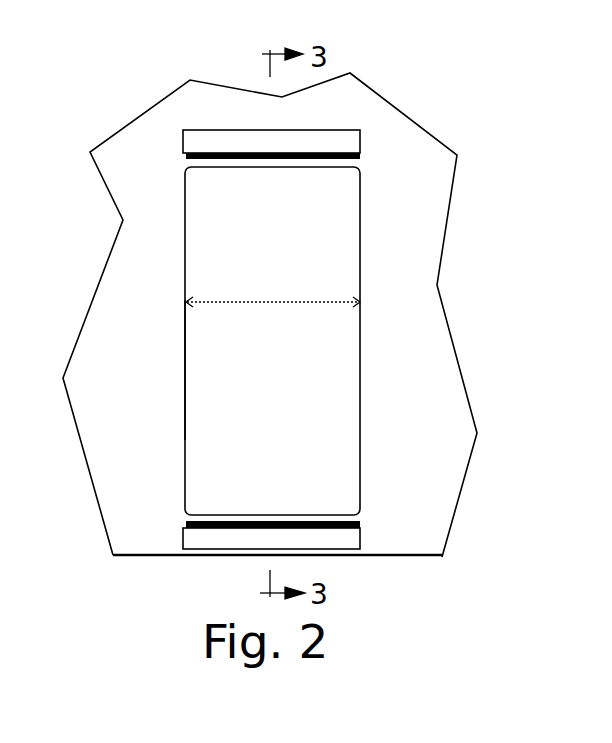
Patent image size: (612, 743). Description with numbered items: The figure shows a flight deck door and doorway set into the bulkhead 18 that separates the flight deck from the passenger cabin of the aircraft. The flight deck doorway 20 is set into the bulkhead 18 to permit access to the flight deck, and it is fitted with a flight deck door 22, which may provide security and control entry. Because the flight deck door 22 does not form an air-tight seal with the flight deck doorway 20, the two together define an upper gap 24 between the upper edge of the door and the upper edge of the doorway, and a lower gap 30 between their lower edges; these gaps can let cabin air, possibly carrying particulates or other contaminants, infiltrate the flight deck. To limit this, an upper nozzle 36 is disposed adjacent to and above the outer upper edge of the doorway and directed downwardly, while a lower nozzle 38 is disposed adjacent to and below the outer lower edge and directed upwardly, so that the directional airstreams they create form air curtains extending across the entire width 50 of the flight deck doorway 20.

The bulkhead 18 is at (433, 536).
The flight deck doorway 20 is at (360, 217).
The flight deck door 22 is at (185, 382).
The upper gap 24 is at (201, 168).
The lower gap 30 is at (343, 515).
The upper nozzle 36 is at (290, 130).
The lower nozzle 38 is at (183, 537).
The width of the flight deck doorway 50 is at (305, 303).